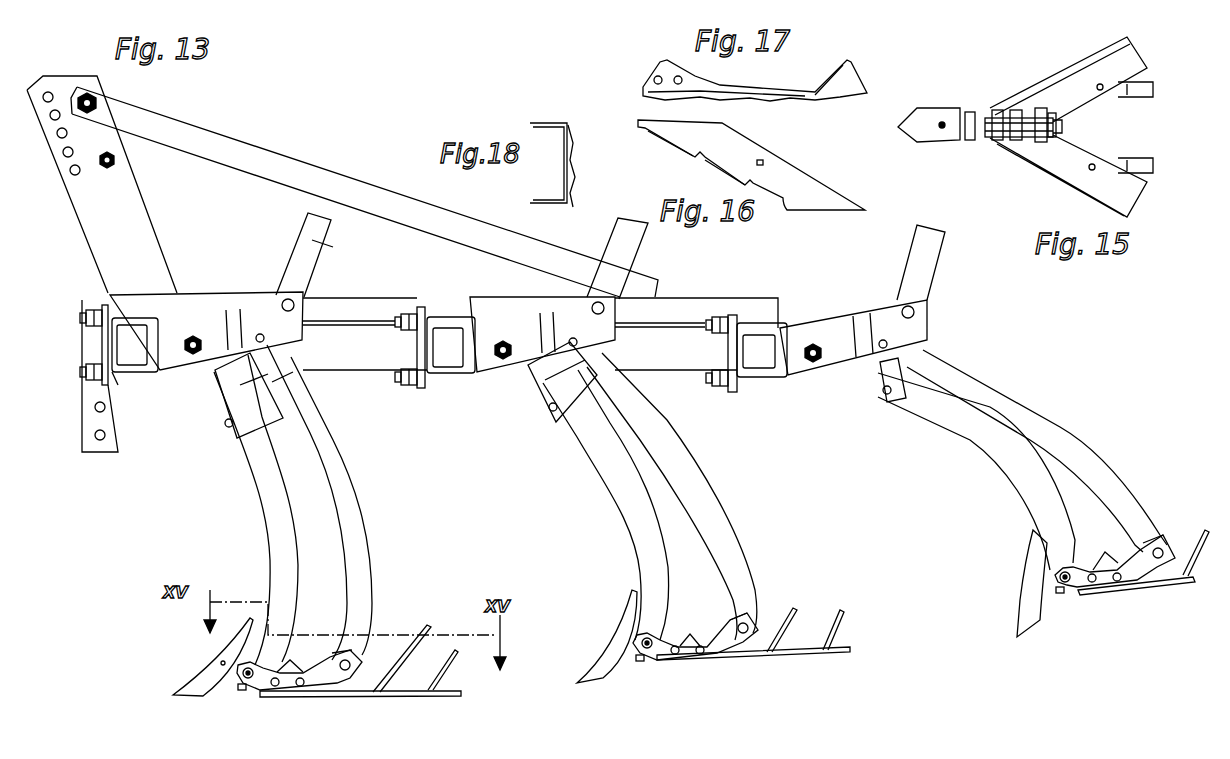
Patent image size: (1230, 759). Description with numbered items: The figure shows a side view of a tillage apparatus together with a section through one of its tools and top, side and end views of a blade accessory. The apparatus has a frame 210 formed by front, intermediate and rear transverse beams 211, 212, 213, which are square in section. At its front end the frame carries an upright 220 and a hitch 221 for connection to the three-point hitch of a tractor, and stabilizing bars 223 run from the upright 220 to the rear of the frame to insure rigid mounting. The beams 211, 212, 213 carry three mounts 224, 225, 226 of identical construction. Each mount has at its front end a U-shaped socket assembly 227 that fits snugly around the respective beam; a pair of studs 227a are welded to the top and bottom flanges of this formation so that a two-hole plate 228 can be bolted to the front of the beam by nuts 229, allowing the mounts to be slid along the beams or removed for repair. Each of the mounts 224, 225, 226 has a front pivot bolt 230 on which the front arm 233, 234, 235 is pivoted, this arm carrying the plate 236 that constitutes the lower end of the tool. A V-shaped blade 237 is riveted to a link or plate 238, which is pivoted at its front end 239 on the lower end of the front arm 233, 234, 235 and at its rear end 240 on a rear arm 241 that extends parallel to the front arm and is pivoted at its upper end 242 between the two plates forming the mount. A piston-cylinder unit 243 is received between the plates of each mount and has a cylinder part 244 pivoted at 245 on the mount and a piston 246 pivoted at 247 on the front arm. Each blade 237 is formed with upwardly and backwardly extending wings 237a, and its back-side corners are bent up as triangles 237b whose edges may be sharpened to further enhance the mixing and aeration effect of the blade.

In FIG. 13, the frame 210 is at (370, 375).
In FIG. 13, the front transverse beam 211 is at (148, 362).
In FIG. 13, the intermediate transverse beam 212 is at (458, 368).
In FIG. 13, the rear transverse beam 213 is at (755, 367).
In FIG. 13, the upright 220 is at (105, 247).
In FIG. 13, the hitch 221 is at (95, 425).
In FIG. 13, the stabilizing bar 223 is at (262, 160).
In FIG. 13, the mount 224 is at (178, 320).
In FIG. 13, the mount 225 is at (595, 362).
In FIG. 13, the mount 226 is at (845, 333).
In FIG. 13, the U-shaped socket assembly 227 is at (142, 320).
In FIG. 13, the stud 227a is at (118, 372).
In FIG. 13, the two-hole plate 228 is at (103, 340).
In FIG. 13, the nut 229 is at (90, 310).
In FIG. 13, the front pivot bolt 230 is at (196, 338).
In FIG. 13, the arm 233 is at (283, 582).
In FIG. 15, the arm 233 is at (978, 116).
In FIG. 13, the arm 234 is at (655, 560).
In FIG. 13, the arm 235 is at (1030, 470).
In FIG. 13, the plate 236 is at (203, 677).
In FIG. 16, the plate 236 is at (751, 165).
In FIG. 15, the plate 236 is at (923, 120).
In FIG. 13, the V-shaped blade 237 is at (380, 693).
In FIG. 15, the V-shaped blade 237 is at (1075, 162).
In FIG. 13, the wing 237a is at (447, 656).
In FIG. 15, the wing 237a is at (1132, 165).
In FIG. 17, the triangle 237b is at (843, 87).
In FIG. 18, the triangle 237b is at (533, 203).
In FIG. 13, the link plate 238 is at (290, 683).
In FIG. 15, the link plate 238 is at (1012, 137).
In FIG. 13, the front end pivot 239 is at (247, 678).
In FIG. 15, the front end pivot 239 is at (967, 130).
In FIG. 13, the rear end pivot 240 is at (345, 668).
In FIG. 15, the rear end pivot 240 is at (1038, 113).
In FIG. 13, the rear arm 241 is at (340, 494).
In FIG. 15, the rear arm 241 is at (1055, 125).
In FIG. 13, the upper pivot 242 is at (268, 339).
In FIG. 13, the piston-cylinder unit 243 is at (286, 258).
In FIG. 13, the cylinder part 244 is at (327, 243).
In FIG. 13, the cylinder pivot 245 is at (295, 302).
In FIG. 13, the piston 246 is at (250, 385).
In FIG. 13, the piston pivot 247 is at (228, 425).